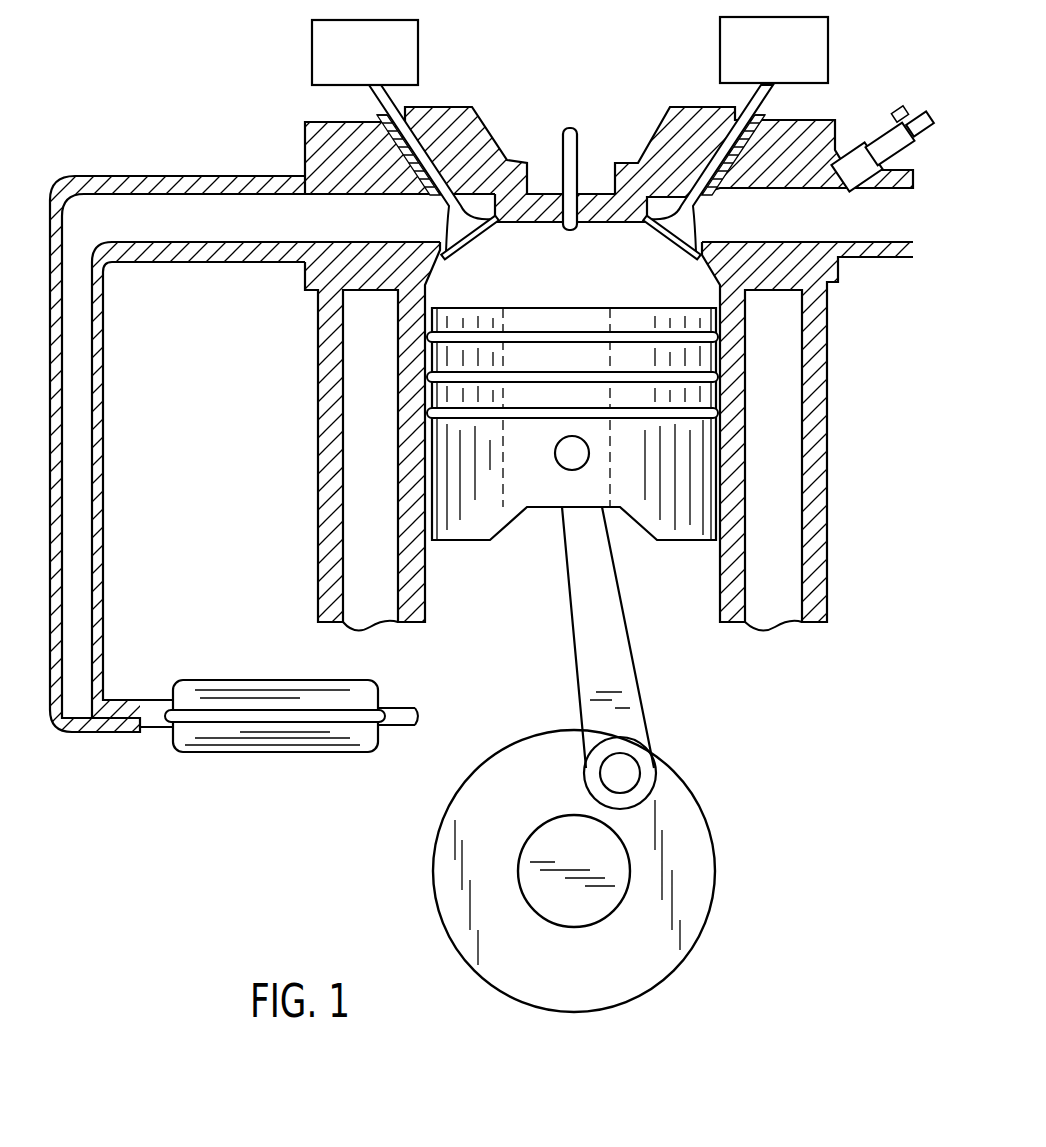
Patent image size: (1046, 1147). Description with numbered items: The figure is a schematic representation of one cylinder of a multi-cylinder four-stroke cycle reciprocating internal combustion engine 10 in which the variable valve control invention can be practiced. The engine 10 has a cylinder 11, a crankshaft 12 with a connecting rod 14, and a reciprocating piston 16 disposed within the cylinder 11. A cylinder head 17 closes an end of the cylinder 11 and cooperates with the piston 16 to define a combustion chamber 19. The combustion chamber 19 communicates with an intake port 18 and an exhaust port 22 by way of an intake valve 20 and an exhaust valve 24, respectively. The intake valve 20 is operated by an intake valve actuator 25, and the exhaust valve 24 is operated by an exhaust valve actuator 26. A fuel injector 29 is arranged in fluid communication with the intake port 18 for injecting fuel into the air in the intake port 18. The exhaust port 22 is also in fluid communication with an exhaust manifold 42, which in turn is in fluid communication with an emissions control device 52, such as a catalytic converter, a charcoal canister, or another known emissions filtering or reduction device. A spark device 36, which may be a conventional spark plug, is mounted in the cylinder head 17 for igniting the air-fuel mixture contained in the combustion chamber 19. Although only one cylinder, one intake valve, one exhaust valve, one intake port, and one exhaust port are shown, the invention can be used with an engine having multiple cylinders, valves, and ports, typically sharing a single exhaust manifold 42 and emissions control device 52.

The internal combustion engine 10 is at (286, 476).
The cylinder 11 is at (428, 585).
The crankshaft 12 is at (698, 837).
The connecting rod 14 is at (580, 650).
The piston 16 is at (682, 527).
The cylinder head 17 is at (588, 188).
The intake port 18 is at (872, 225).
The combustion chamber 19 is at (592, 286).
The intake valve 20 is at (765, 97).
The exhaust port 22 is at (330, 217).
The exhaust valve 24 is at (392, 102).
The intake valve actuator 25 is at (718, 50).
The exhaust valve actuator 26 is at (331, 49).
The fuel injector 29 is at (908, 124).
The spark device 36 is at (543, 150).
The exhaust manifold 42 is at (90, 222).
The emissions control device 52 is at (262, 752).